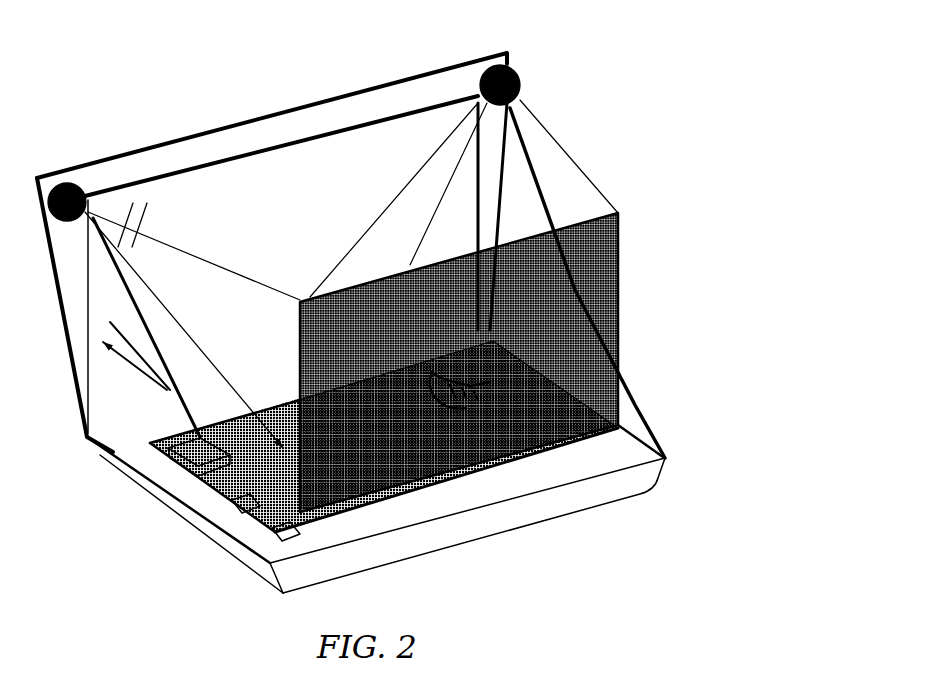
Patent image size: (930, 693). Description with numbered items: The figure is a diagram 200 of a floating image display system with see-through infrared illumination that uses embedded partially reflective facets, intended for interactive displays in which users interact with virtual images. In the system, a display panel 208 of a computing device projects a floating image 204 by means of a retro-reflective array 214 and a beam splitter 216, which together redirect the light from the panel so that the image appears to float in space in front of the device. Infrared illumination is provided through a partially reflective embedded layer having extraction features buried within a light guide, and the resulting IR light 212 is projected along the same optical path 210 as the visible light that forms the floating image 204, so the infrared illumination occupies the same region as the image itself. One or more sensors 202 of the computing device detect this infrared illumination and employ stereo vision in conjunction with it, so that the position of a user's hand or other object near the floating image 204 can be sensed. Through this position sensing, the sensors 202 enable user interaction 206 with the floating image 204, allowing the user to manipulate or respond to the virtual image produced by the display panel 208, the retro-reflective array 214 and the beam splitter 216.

The diagram 200 is at (752, 46).
The sensors 202 is at (83, 174).
The floating image 204 is at (606, 254).
The user interaction 206 is at (494, 373).
The display panel 208 is at (468, 524).
The optical path 210 is at (180, 484).
The IR light 212 is at (282, 538).
The retro-reflective array 214 is at (105, 290).
The beam splitter 216 is at (524, 172).